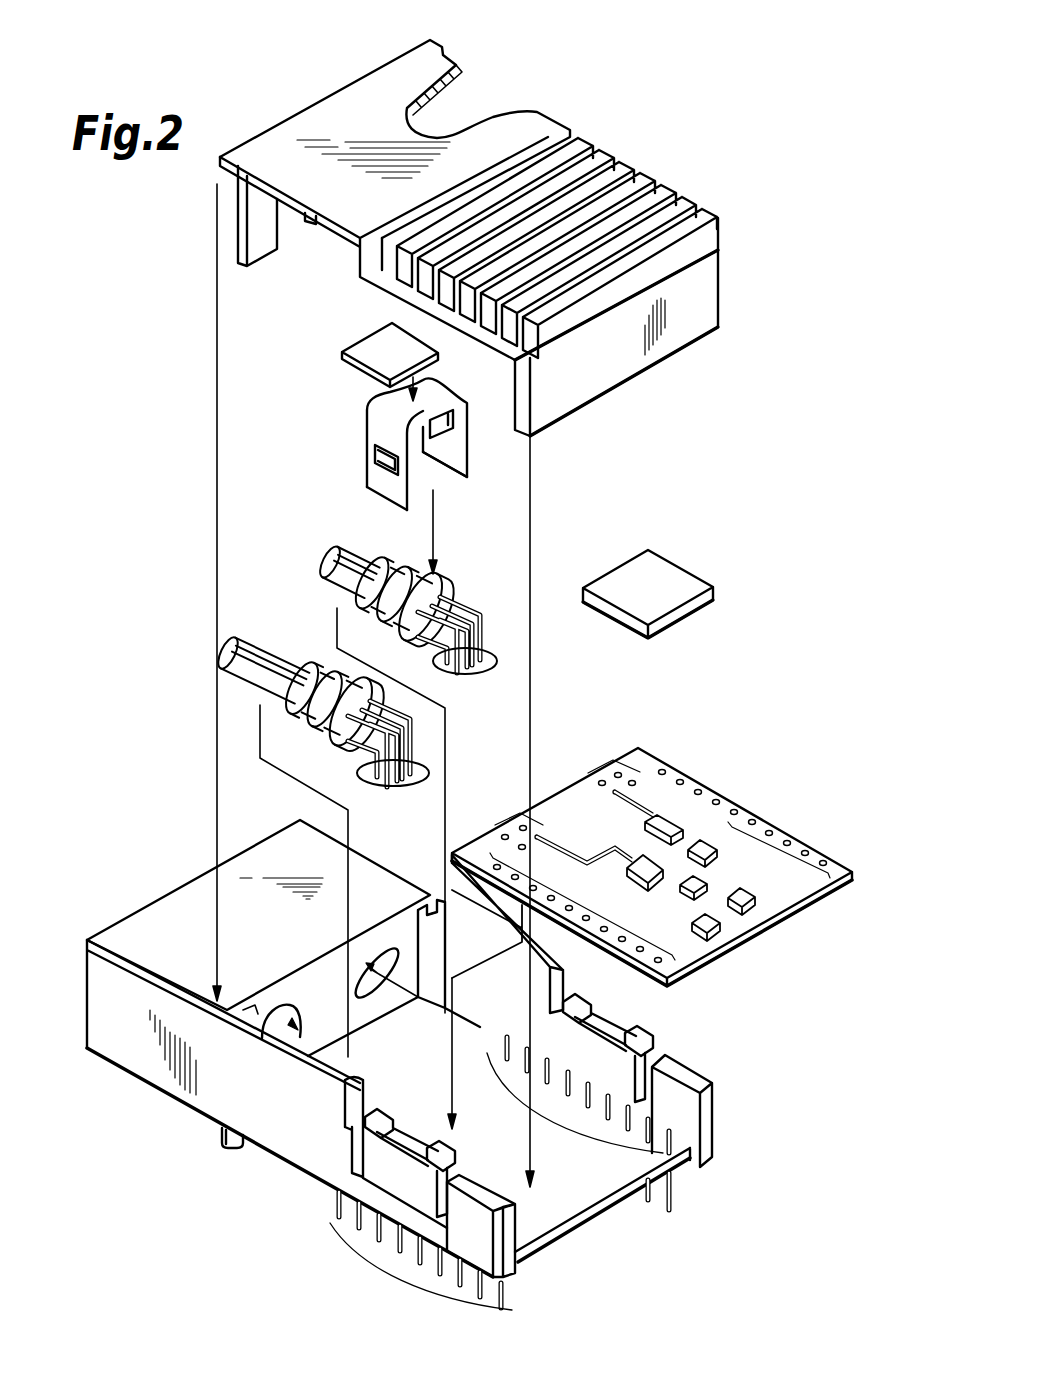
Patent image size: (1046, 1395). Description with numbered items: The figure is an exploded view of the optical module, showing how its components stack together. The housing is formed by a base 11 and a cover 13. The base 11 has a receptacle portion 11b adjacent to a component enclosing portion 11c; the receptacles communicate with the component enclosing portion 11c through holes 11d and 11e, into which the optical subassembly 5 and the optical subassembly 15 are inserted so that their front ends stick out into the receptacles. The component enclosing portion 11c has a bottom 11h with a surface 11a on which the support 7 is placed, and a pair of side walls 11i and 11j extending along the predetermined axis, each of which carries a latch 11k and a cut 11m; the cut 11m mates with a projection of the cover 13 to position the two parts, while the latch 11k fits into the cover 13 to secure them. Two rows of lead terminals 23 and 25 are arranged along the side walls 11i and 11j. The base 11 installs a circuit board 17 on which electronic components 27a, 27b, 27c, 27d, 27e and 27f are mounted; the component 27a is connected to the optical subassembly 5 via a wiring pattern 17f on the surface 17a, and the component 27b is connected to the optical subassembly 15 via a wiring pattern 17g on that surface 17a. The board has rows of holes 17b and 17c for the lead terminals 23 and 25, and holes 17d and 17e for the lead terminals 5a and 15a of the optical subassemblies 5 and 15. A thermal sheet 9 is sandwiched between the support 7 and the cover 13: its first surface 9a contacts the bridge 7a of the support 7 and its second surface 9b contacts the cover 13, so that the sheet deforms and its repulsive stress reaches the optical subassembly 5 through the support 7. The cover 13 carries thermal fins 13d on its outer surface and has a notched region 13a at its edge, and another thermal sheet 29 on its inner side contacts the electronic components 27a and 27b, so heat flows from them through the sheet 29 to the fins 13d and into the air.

The optical subassembly 5 is at (443, 585).
The lead terminal 5a is at (478, 677).
The support 7 is at (435, 397).
The bridge 7a is at (397, 413).
The thermal sheet 9 is at (370, 378).
The first surface 9a is at (370, 347).
The second surface 9b is at (352, 370).
The base 11 is at (153, 900).
The bottom surface 11a is at (392, 1057).
The receptacle portion 11b is at (432, 865).
The component enclosing portion 11c is at (742, 1055).
The hole 11d is at (382, 958).
The hole 11e is at (288, 1003).
The bottom 11h is at (625, 1192).
The side wall 11i is at (707, 1123).
The side wall 11j is at (512, 1260).
The latch 11k is at (443, 1148).
The cut 11m is at (433, 897).
The cover 13 is at (616, 360).
The notch of cover 13a is at (443, 103).
The thermal fins 13d is at (717, 216).
The optical subassembly 15 is at (322, 668).
The lead terminal 15a is at (367, 773).
The circuit board 17 is at (740, 798).
The surface 17a is at (742, 923).
The row of holes 17b is at (774, 850).
The row of holes 17c is at (575, 912).
The holes 17d is at (613, 762).
The holes 17e is at (520, 818).
The wiring pattern 17f is at (643, 802).
The wiring pattern 17g is at (580, 857).
The lead terminals 23 is at (627, 1140).
The lead terminals 25 is at (402, 1272).
The electronic component 27a is at (667, 815).
The electronic component 27b is at (637, 887).
The electronic component 27c is at (717, 852).
The electronic component 27d is at (688, 888).
The electronic component 27e is at (750, 902).
The electronic component 27f is at (712, 930).
The thermal sheet 29 is at (665, 580).